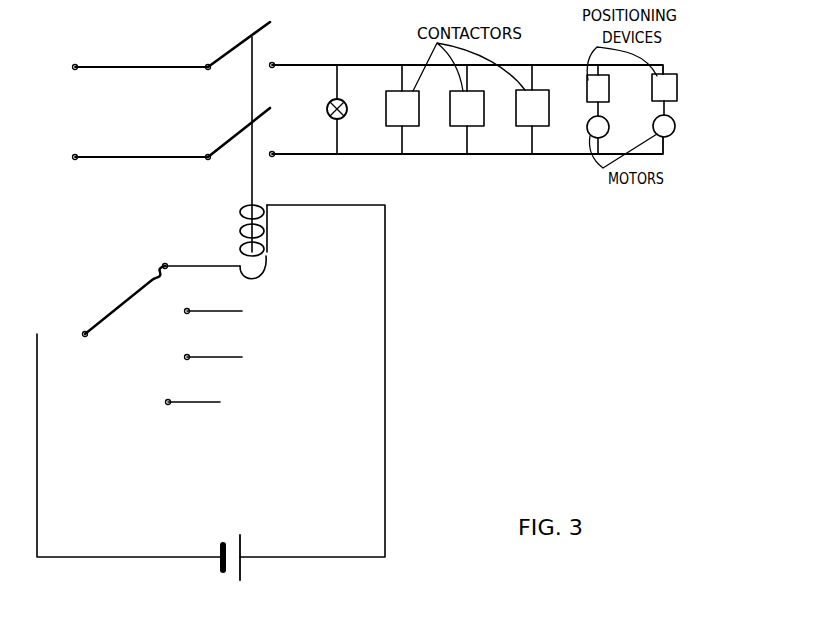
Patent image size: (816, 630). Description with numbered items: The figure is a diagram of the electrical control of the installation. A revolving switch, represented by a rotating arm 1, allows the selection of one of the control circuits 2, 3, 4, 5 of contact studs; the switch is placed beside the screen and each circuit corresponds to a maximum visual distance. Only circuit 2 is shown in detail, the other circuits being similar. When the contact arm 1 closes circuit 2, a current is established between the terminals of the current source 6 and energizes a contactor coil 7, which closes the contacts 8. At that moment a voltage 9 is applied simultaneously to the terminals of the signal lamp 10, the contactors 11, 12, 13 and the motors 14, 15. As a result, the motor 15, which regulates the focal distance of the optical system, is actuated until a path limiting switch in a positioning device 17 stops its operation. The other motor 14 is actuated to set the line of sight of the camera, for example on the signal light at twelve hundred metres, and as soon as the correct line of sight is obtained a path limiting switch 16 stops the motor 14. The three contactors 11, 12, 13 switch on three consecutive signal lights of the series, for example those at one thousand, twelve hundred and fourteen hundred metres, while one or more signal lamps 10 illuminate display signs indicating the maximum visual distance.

The rotating arm 1 is at (118, 303).
The circuit 2 is at (202, 253).
The circuit 3 is at (214, 298).
The circuit 4 is at (214, 344).
The circuit 5 is at (193, 388).
The current source 6 is at (245, 542).
The contactor coil 7 is at (272, 238).
The contacts 8 is at (226, 52).
The voltage 9 is at (70, 78).
The signal lamp 10 is at (350, 95).
The contactor 11 is at (414, 102).
The contactor 12 is at (478, 102).
The contactor 13 is at (555, 95).
The motor 14 is at (609, 134).
The motor 15 is at (672, 133).
The path limiting switch 16 is at (607, 101).
The positioning device 17 is at (683, 94).